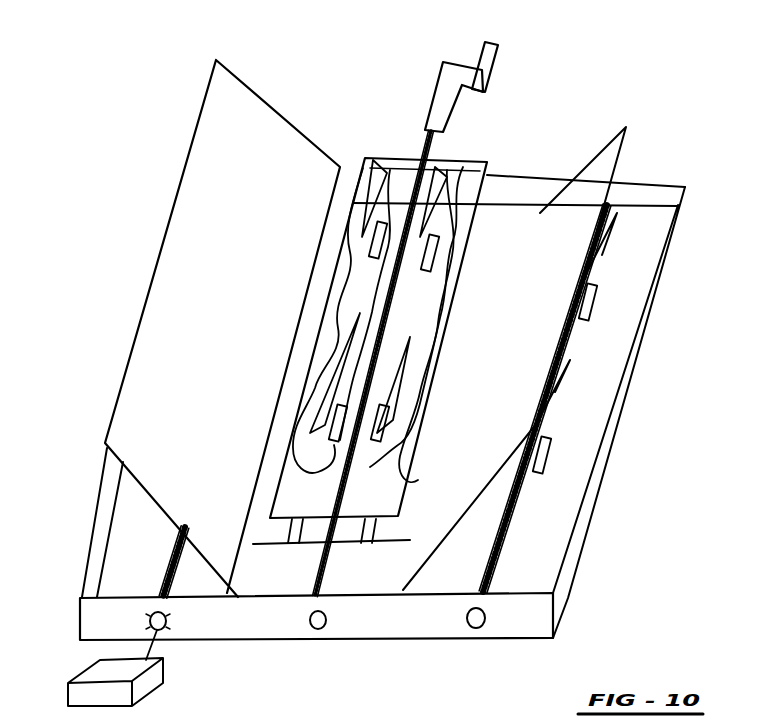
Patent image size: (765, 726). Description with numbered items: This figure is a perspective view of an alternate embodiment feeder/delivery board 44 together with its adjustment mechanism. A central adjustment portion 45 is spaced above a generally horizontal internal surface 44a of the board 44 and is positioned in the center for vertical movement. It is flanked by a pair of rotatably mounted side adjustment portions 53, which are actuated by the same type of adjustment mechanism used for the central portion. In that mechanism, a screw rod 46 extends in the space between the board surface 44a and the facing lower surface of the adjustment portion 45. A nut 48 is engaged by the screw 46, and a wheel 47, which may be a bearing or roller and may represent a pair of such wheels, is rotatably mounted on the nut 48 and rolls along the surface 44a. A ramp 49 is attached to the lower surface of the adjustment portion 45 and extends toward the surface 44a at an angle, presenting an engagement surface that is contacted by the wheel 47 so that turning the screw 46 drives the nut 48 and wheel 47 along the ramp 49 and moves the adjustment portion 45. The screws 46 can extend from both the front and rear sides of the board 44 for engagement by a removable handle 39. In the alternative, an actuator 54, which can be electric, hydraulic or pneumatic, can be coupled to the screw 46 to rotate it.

The removable handle 39 is at (442, 92).
The feeder/delivery board 44 is at (384, 417).
The internal surface 44a is at (553, 508).
The adjustment portion 45 is at (472, 165).
The screw rod 46 is at (175, 540).
The wheel 47 is at (680, 320).
The nut 48 is at (466, 452).
The ramp 49 is at (383, 160).
The side adjustment portion 53 is at (197, 212).
The actuator 54 is at (108, 673).